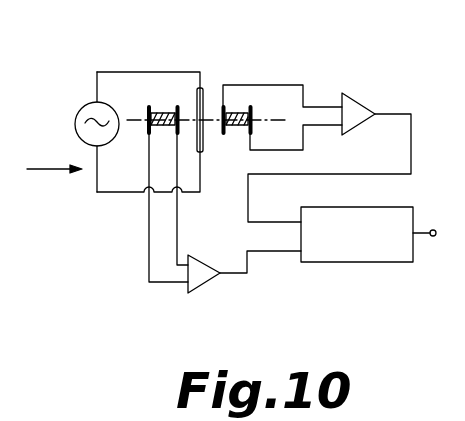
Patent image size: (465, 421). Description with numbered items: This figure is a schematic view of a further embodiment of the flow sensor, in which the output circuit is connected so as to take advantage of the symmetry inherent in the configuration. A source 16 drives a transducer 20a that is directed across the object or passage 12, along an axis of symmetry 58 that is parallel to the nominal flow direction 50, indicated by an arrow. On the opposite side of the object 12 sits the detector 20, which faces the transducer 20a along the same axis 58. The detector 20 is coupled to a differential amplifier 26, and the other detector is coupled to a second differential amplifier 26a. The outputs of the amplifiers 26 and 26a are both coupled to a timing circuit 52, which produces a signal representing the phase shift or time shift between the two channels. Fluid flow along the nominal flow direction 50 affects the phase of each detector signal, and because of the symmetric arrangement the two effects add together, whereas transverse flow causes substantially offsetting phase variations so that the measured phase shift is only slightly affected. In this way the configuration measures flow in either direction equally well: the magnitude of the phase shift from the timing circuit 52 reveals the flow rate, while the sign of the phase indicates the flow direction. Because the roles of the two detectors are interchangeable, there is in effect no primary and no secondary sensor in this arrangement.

The oscillator / AC source 16 is at (88, 103).
The transmitting transducer 20a is at (163, 113).
The object under measurement 12 is at (205, 108).
The axis of symmetry 58 is at (133, 125).
The detector 20 is at (238, 113).
The differential amplifier 26 is at (362, 75).
The differential amplifier 26a is at (203, 283).
The timing circuit 52 is at (375, 265).
The nominal flow direction 50 is at (37, 176).